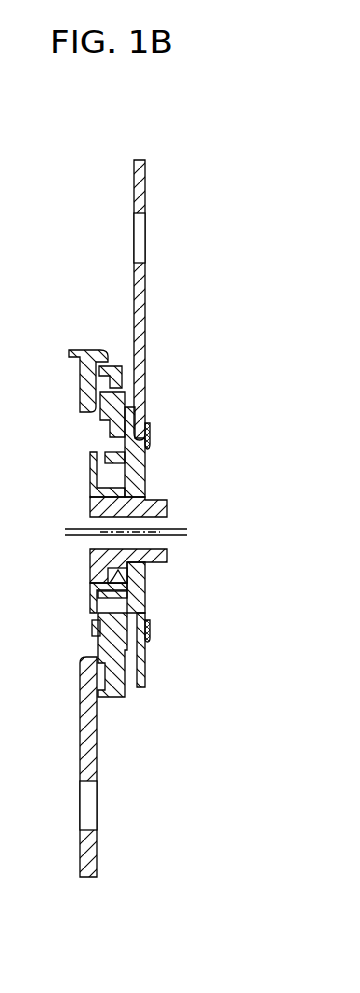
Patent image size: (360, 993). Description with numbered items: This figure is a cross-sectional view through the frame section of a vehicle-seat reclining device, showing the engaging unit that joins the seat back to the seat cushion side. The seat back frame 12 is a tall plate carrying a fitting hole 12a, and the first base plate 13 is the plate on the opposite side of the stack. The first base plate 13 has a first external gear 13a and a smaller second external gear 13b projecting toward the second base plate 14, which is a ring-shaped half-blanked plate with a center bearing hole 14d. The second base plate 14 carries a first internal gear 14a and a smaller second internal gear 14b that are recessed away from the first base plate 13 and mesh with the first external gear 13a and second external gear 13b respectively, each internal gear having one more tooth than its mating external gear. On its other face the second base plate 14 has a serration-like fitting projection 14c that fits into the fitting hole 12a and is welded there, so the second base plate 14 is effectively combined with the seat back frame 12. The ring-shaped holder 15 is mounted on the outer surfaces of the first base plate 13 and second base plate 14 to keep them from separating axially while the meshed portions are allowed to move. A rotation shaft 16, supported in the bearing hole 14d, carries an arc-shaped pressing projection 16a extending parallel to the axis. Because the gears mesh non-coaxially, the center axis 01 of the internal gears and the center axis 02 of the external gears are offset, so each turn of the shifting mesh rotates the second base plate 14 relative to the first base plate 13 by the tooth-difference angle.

The seat back frame 12 is at (145, 175).
The fitting hole 12a is at (150, 444).
The first base plate 13 is at (82, 737).
The first external gear 13a is at (90, 630).
The second external gear 13b is at (135, 606).
The second base plate 14 is at (140, 468).
The first internal gear 14a is at (97, 657).
The second internal gear 14b is at (143, 668).
The fitting projection 14c is at (150, 650).
The bearing hole 14d is at (150, 505).
The holder 15 is at (83, 350).
The rotation shaft 16 is at (90, 475).
The pressing projection 16a is at (150, 580).
The center axis of the first and second internal gears 01 is at (75, 538).
The center axis of the first and second external gears 02 is at (75, 527).